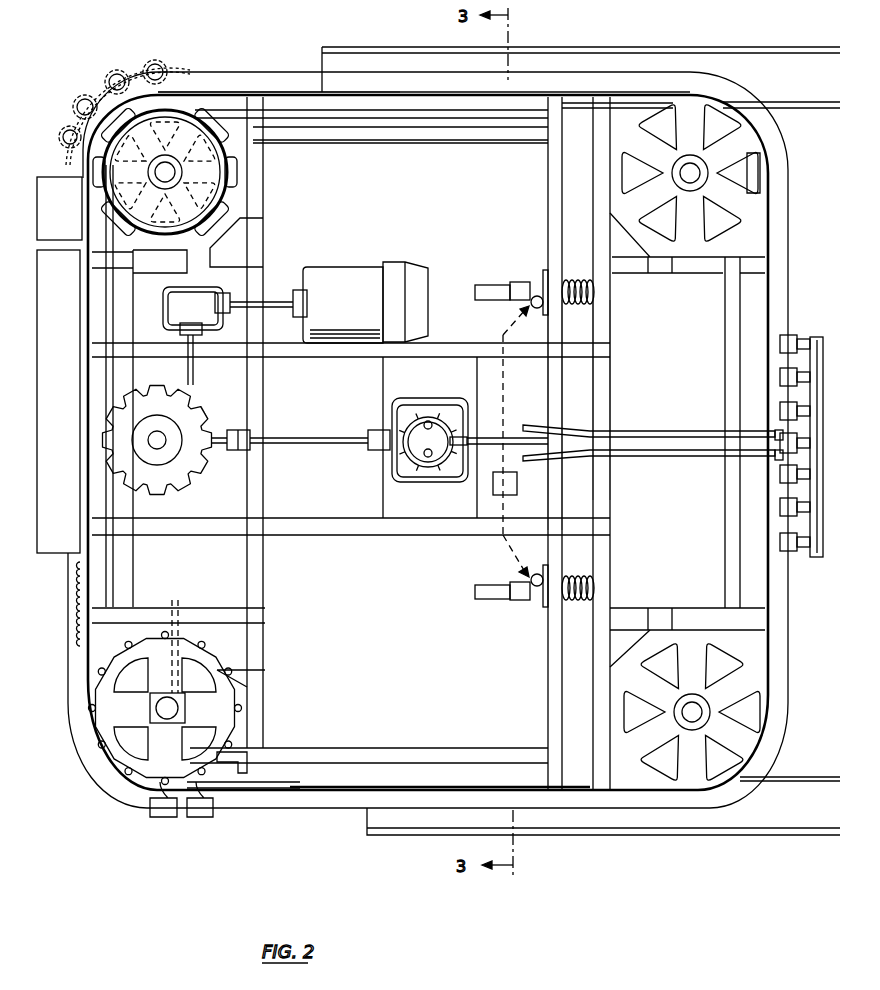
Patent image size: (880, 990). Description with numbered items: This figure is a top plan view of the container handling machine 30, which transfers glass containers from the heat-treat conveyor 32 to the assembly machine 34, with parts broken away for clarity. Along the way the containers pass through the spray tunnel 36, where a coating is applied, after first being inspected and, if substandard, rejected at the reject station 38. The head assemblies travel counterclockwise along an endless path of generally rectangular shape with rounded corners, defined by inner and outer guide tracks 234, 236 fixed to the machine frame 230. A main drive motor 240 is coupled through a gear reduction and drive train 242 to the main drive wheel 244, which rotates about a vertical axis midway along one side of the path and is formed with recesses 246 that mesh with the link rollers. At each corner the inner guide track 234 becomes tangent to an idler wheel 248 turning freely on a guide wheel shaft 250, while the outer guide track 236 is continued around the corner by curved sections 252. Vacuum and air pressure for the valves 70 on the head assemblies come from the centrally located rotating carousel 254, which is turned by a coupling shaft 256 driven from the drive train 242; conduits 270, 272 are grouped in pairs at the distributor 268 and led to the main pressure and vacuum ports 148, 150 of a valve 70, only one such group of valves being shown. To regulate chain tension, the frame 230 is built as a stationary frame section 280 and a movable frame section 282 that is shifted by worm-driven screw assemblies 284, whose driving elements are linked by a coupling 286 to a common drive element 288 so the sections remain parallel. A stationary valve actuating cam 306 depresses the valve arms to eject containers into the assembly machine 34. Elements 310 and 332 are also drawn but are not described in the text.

The machine 30 is at (782, 265).
The heat-treat conveyor 32 is at (735, 45).
The assembly machine 34 is at (705, 816).
The spray tunnel 36 is at (57, 542).
The reject station 38 is at (43, 182).
The valve 70 is at (790, 343).
The main pressure port 148 is at (782, 455).
The main vacuum port 150 is at (780, 435).
The machine frame 230 is at (305, 543).
The inner guide track 234 is at (336, 113).
The outer guide track 236 is at (252, 90).
The main drive motor 240 is at (345, 277).
The gear reduction and drive train 242 is at (205, 313).
The main drive wheel 244 is at (196, 482).
The recesses 246 is at (205, 405).
The idler wheel 248 is at (207, 207).
The guide wheel shaft 250 is at (170, 173).
The curved sections 252 is at (107, 92).
The rotating carousel 254 is at (378, 494).
The coupling shaft 256 is at (272, 443).
The distributor 268 is at (437, 415).
The conduit 270 is at (635, 457).
The conduit 272 is at (643, 432).
The stationary frame section 280 is at (560, 528).
The movable frame section 282 is at (603, 501).
The worm-driven screw assembly 284 is at (491, 280).
The coupling 286 is at (507, 398).
The common drive element 288 is at (493, 487).
The valve actuating cam 306 is at (578, 794).
The idler wheel 310 is at (107, 771).
The chain sprocket 332 is at (166, 78).